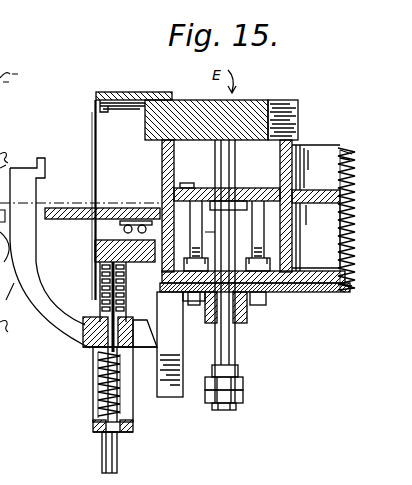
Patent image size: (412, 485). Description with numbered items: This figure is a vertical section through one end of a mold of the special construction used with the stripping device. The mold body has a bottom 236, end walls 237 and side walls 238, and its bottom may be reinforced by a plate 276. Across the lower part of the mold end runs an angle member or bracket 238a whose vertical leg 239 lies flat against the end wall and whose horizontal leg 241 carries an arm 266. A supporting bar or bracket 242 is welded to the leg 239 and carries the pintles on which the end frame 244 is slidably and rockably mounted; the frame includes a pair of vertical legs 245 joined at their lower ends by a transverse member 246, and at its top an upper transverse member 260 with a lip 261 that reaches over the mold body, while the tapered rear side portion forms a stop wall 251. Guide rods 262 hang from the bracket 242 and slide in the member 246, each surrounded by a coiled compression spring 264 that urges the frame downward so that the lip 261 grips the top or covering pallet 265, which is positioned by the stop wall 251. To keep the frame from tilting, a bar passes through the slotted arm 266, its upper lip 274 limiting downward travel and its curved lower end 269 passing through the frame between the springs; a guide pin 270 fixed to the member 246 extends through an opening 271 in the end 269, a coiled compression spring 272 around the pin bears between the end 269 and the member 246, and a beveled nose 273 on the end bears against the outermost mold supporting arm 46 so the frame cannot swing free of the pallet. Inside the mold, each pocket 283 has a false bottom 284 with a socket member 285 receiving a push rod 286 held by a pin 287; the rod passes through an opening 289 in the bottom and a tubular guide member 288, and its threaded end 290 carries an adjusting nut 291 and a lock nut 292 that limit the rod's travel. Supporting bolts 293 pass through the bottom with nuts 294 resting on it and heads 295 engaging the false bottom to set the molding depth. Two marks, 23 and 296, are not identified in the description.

The threaded rod 23 is at (374, 234).
The mold supporting arms 46 is at (167, 398).
The bottom 236 is at (300, 292).
The end walls 237 is at (168, 130).
The side walls 238 is at (340, 155).
The angle member or bracket 238a is at (112, 265).
The vertical leg 239 is at (150, 272).
The horizontal leg 241 is at (122, 226).
The supporting bar or bracket 242 is at (96, 252).
The frame 244 is at (85, 397).
The vertical legs 245 is at (92, 410).
The transverse member 246 is at (93, 427).
The stop wall 251 is at (206, 131).
The upper transverse member 260 is at (96, 105).
The lip 261 is at (153, 92).
The guide rods 262 is at (102, 456).
The coiled compression spring 264 is at (84, 318).
The top or covering pallet 265 is at (256, 101).
The arm 266 is at (100, 204).
The lower end 269 is at (88, 347).
The guide pin 270 is at (103, 336).
The opening 271 is at (110, 332).
The coiled compression spring 272 is at (99, 372).
The beveled nose 273 is at (232, 344).
The lip 274 is at (50, 160).
The plate 276 is at (336, 290).
The cells or pockets 283 is at (325, 150).
The false bottom 284 is at (224, 186).
The socket member 285 is at (276, 186).
The push rod 286 is at (237, 370).
The pin 287 is at (340, 267).
The tubular guide member 288 is at (248, 306).
The opening 289 is at (340, 266).
The threaded end 290 is at (224, 410).
The adjusting nut 291 is at (244, 383).
The lock nut 292 is at (244, 394).
The supporting bolts 293 is at (302, 226).
The nuts 294 is at (186, 298).
The heads 295 is at (330, 176).
The right housing wall 296 is at (268, 157).